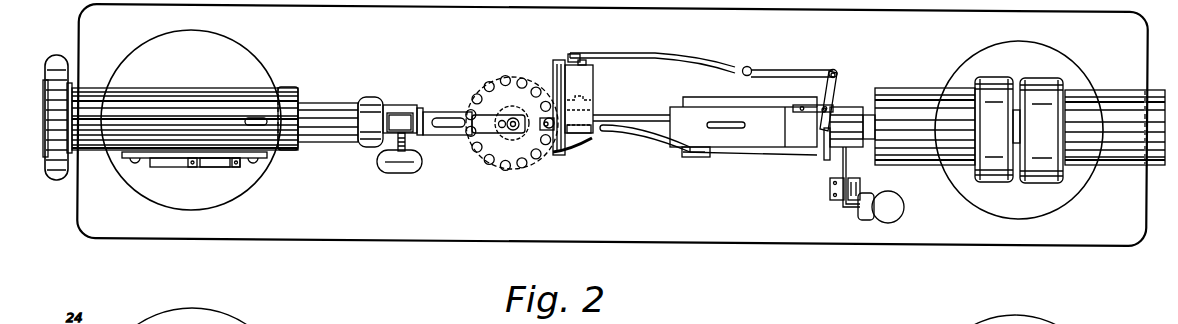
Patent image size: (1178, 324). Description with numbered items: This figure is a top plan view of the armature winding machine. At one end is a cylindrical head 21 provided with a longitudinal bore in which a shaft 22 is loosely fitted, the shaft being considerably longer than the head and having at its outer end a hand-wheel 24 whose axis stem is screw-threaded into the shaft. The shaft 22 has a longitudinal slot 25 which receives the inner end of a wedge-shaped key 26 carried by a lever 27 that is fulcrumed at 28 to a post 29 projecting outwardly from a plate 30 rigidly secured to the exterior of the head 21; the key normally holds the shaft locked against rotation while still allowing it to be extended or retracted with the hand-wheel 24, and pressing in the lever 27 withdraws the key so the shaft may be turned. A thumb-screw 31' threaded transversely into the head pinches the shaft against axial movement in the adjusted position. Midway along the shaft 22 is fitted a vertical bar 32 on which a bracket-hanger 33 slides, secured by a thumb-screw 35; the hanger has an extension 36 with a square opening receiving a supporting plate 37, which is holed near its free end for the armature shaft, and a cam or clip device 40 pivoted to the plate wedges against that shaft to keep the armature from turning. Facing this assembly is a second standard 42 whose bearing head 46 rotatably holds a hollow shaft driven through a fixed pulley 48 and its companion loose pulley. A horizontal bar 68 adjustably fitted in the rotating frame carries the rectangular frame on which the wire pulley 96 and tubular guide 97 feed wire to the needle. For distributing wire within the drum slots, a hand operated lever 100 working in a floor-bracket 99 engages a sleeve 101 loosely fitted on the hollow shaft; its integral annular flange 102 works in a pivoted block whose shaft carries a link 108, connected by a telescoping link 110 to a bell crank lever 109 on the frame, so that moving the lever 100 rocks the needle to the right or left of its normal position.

The cylindrical head 21 is at (196, 104).
The shaft 22 is at (322, 112).
The hand-wheel 24 is at (55, 181).
The longitudinal slot 25 is at (1112, 92).
The wedge-shaped key 26 is at (240, 166).
The lever 27 is at (222, 168).
The fulcrum 28 is at (195, 176).
The post 29 is at (192, 168).
The plate 30 is at (146, 159).
The thumb-screw 31' is at (281, 92).
The vertical bar 32 is at (401, 113).
The bracket-hanger 33 is at (421, 112).
The thumb-screw 35 is at (401, 172).
The extension 36 is at (455, 137).
The supporting plate 37 is at (486, 120).
The cam or clip device 40 is at (505, 133).
The standard 42 is at (1066, 197).
The bearing head 46 is at (907, 92).
The fixed pulley 48 is at (991, 82).
The horizontal bar 68 is at (631, 117).
The pulley 96 is at (702, 158).
The tubular guide 97 is at (655, 138).
The floor-bracket 99 is at (861, 189).
The hand operated lever 100 is at (843, 163).
The sleeve 101 is at (846, 113).
The annular flange 102 is at (822, 151).
The link 108 is at (838, 86).
The bell crank lever 109 is at (568, 62).
The telescoping link 110 is at (693, 58).